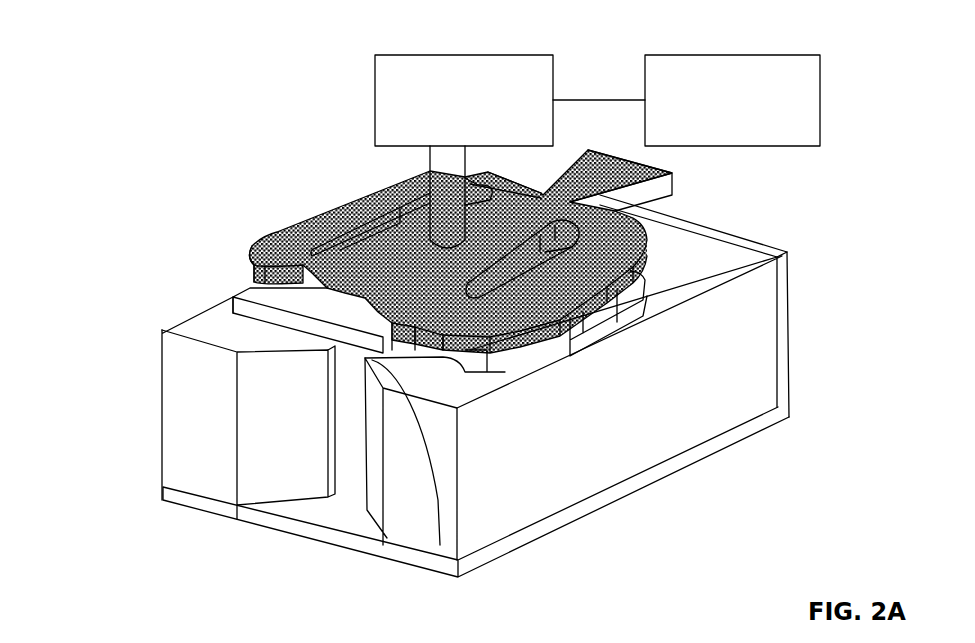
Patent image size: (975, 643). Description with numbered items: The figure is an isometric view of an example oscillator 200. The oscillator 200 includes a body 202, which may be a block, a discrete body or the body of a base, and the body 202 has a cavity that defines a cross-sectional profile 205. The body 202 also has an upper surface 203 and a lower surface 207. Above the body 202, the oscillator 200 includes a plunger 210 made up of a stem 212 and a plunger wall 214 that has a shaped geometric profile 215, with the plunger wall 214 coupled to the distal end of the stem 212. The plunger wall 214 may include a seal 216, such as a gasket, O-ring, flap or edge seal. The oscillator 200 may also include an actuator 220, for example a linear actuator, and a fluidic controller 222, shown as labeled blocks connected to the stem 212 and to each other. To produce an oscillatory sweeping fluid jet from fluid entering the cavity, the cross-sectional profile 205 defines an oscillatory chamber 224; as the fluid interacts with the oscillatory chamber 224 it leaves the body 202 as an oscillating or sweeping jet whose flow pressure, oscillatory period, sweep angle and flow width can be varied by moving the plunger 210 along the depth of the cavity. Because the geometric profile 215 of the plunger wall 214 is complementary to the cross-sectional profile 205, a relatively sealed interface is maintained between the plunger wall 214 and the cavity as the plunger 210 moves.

The oscillator 200 is at (101, 53).
The body 202 is at (808, 276).
The upper surface 203 is at (690, 278).
The cross-sectional profile 205 is at (262, 413).
The lower surface 207 is at (617, 502).
The plunger 210 is at (310, 197).
The stem 212 is at (437, 153).
The plunger wall 214 is at (274, 252).
The geometric profile 215 is at (647, 249).
The seal 216 is at (352, 347).
The actuator 220 is at (445, 55).
The fluidic controller 222 is at (712, 55).
The oscillatory chamber 224 is at (440, 545).